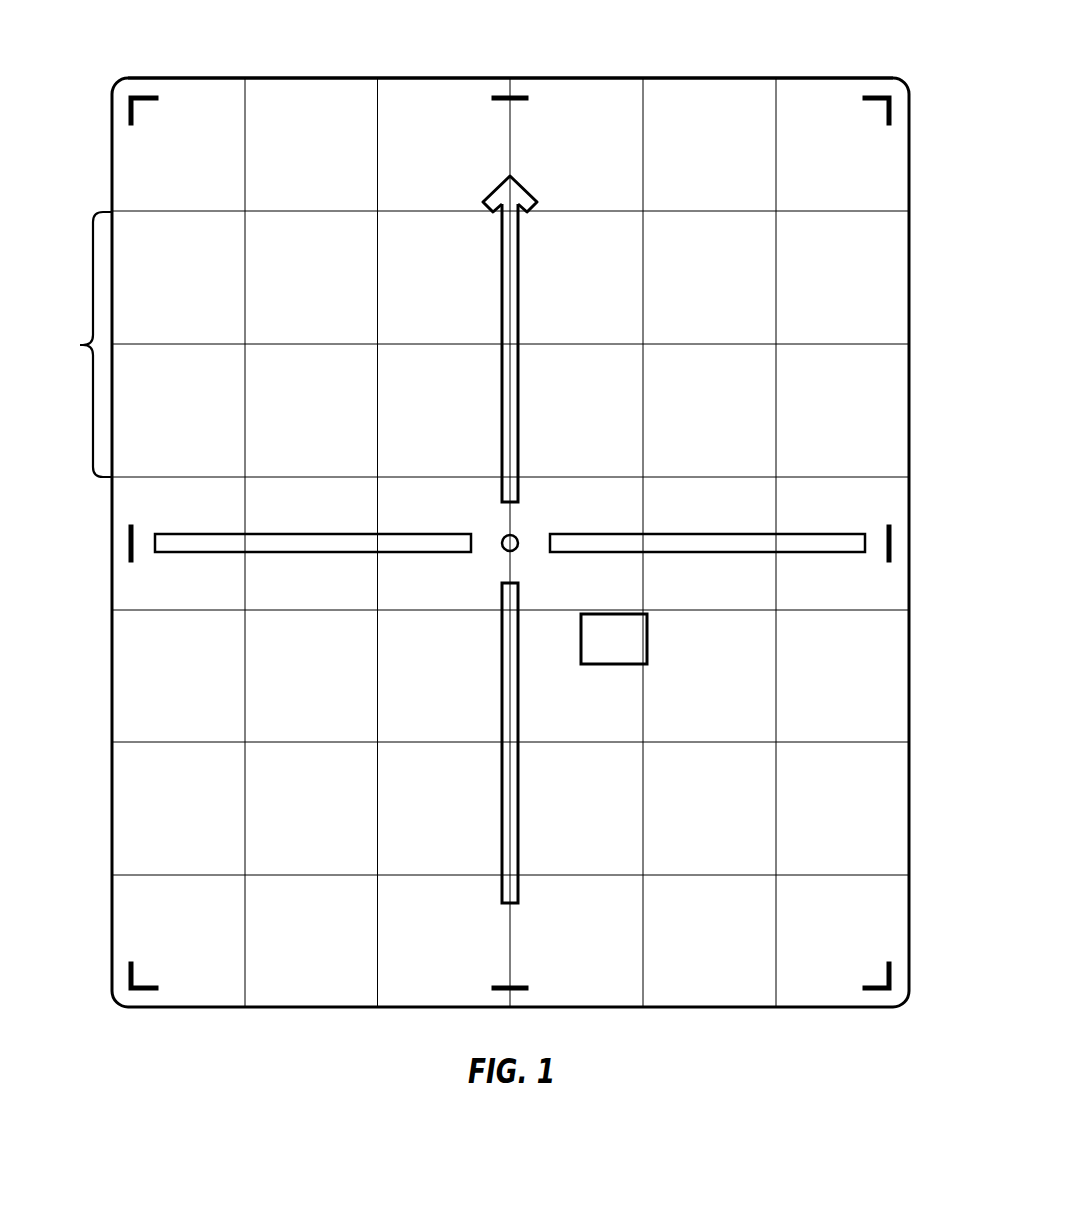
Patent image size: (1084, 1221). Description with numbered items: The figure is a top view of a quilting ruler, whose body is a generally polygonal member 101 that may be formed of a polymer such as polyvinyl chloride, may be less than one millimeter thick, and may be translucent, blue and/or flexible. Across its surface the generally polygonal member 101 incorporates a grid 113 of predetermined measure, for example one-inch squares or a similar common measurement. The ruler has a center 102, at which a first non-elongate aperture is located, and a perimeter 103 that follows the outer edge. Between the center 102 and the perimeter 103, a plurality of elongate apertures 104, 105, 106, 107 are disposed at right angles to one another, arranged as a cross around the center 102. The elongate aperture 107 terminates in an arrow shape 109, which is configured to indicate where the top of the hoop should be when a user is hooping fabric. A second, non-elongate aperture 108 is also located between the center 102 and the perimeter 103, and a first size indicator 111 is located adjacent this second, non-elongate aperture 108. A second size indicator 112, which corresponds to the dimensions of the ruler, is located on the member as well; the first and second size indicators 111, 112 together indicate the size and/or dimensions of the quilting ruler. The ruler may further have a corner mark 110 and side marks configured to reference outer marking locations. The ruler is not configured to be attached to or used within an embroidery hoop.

The generally polygonal member 101 is at (882, 254).
The center 102 is at (518, 540).
The perimeter 103 is at (737, 78).
The elongate aperture 104 is at (838, 544).
The elongate aperture 105 is at (508, 890).
The elongate aperture 106 is at (182, 543).
The elongate aperture 107 is at (518, 255).
The second non-elongate aperture 108 is at (638, 642).
The arrow shape 109 is at (496, 198).
The corner mark 110 is at (143, 96).
The first size indicator 111 is at (638, 683).
The second size indicator 112 is at (200, 658).
The grid 113 is at (78, 344).